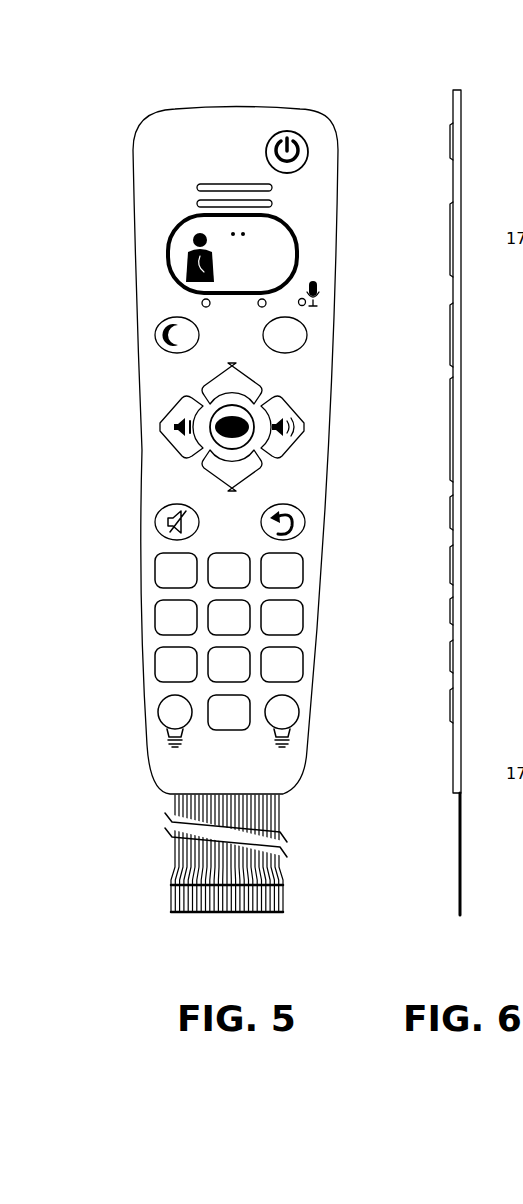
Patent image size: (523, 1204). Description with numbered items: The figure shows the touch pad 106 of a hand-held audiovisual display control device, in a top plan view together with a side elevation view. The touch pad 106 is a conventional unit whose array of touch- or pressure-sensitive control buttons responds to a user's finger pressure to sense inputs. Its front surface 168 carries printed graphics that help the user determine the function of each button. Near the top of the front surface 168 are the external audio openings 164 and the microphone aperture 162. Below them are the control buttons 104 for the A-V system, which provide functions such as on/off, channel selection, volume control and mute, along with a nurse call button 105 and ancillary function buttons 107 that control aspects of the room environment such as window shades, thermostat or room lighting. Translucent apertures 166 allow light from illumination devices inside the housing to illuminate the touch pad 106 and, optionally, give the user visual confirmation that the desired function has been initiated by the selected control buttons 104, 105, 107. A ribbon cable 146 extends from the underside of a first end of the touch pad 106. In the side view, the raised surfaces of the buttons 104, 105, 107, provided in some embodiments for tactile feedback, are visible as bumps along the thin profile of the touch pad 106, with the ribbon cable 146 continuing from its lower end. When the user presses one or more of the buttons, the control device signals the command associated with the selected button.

In FIG. 5, the control buttons 104 is at (163, 262).
In FIG. 6, the control buttons 104 is at (450, 471).
In FIG. 5, the nurse call button 105 is at (292, 232).
In FIG. 6, the nurse call button 105 is at (450, 242).
In FIG. 5, the touch pad 106 is at (158, 138).
In FIG. 6, the touch pad 106 is at (460, 84).
In FIG. 5, the ancillary function buttons 107 is at (187, 725).
In FIG. 6, the ancillary function buttons 107 is at (450, 707).
In FIG. 5, the ribbon cable 146 is at (262, 868).
In FIG. 5, the microphone aperture 162 is at (300, 298).
In FIG. 5, the external audio openings 164 is at (250, 202).
In FIG. 5, the translucent apertures 166 is at (208, 307).
In FIG. 5, the front surface 168 is at (297, 473).